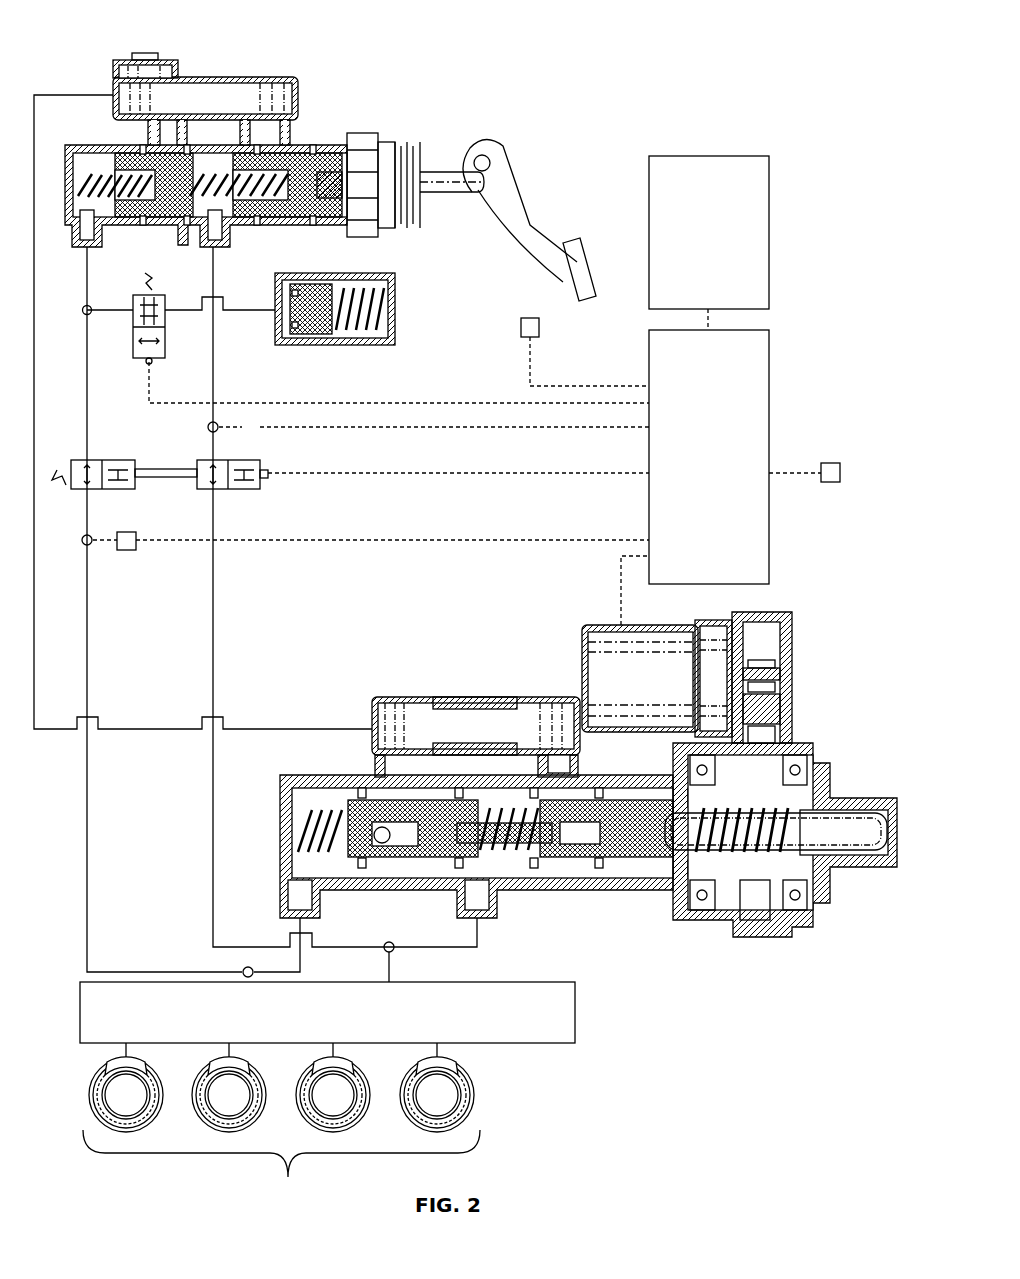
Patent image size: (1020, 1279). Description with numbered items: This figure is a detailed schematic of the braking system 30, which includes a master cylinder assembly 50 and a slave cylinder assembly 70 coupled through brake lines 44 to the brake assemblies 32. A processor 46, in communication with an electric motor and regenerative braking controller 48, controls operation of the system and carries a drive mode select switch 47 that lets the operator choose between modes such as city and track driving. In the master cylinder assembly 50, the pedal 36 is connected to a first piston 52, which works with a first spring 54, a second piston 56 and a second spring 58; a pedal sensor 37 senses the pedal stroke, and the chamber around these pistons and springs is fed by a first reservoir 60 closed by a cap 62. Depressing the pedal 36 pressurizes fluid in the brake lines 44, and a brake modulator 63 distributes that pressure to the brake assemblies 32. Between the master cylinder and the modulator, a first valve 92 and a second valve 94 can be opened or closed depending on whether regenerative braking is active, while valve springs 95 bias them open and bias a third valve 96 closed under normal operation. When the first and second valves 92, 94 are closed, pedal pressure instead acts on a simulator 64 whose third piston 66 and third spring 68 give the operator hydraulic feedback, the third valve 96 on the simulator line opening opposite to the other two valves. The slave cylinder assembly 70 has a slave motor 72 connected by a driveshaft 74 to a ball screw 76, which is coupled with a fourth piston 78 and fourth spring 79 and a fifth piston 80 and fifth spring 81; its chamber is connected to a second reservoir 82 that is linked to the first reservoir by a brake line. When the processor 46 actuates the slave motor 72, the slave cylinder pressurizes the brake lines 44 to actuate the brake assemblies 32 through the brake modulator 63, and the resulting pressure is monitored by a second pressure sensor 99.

The braking system 30 is at (773, 106).
The brake assemblies 32 is at (281, 1127).
The pedal 36 is at (540, 195).
The pedal sensor 37 is at (540, 330).
The brake lines 44 is at (178, 310).
The processor 46 is at (457, 477).
The drive mode select switch 47 is at (832, 463).
The electric motor and regenerative braking controller 48 is at (709, 243).
The master cylinder assembly 50 is at (262, 147).
The first piston 52 is at (350, 140).
The first spring 54 is at (258, 225).
The second piston 56 is at (130, 150).
The second spring 58 is at (95, 197).
The first reservoir 60 is at (235, 77).
The cap 62 is at (125, 60).
The brake modulator 63 is at (327, 1012).
The simulator 64 is at (367, 334).
The third piston 66 is at (312, 345).
The third spring 68 is at (352, 345).
The slave cylinder assembly 70 is at (781, 914).
The slave motor 72 is at (582, 665).
The driveshaft 74 is at (780, 700).
The ball screw 76 is at (818, 855).
The fourth piston 78 is at (612, 868).
The fourth spring 79 is at (508, 855).
The fifth piston 80 is at (390, 860).
The fifth spring 81 is at (300, 808).
The second reservoir 82 is at (450, 697).
The first valve 92 is at (230, 490).
The second valve 94 is at (112, 490).
The valve springs 95 is at (145, 282).
The third valve 96 is at (133, 340).
The second pressure sensor 99 is at (125, 550).